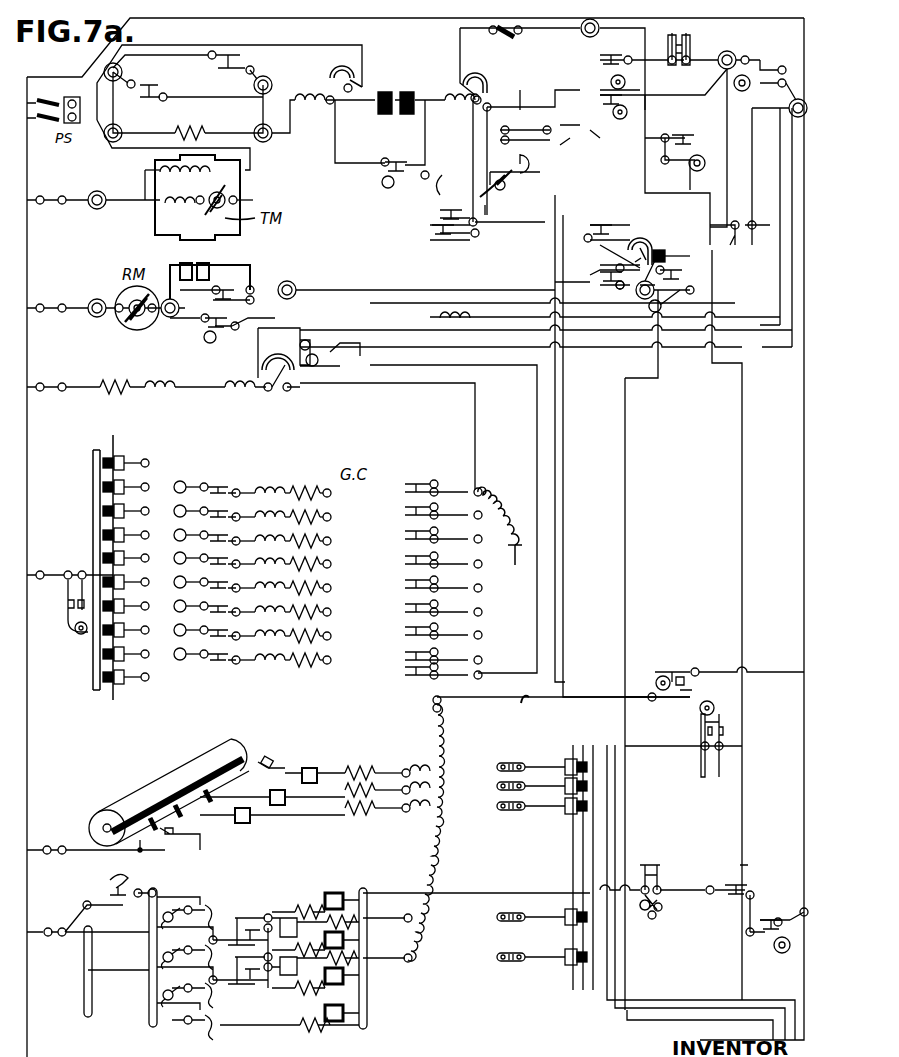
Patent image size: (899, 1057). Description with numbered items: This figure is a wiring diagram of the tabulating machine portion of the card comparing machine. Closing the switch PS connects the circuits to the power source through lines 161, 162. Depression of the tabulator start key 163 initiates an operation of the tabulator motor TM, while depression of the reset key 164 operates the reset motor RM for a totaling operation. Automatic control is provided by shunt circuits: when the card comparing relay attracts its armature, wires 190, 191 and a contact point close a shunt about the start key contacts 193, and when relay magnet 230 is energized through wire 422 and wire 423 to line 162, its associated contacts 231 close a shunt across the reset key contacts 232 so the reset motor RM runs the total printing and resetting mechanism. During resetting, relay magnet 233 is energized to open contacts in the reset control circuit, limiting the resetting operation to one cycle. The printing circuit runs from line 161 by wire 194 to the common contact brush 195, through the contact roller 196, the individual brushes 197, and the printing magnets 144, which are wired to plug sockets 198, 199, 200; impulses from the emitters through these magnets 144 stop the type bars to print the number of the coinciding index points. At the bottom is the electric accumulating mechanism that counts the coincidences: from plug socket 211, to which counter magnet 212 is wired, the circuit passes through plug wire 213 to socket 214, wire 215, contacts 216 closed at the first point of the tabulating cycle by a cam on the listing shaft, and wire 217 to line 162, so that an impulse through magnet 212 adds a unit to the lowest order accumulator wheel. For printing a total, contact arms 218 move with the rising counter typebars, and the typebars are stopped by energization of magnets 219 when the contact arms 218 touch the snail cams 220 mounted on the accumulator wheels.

The line 161 is at (27, 172).
The line 162 is at (804, 396).
The tabulator start key 163 is at (436, 208).
The start key contacts 193 is at (440, 232).
The reset key 164 is at (611, 257).
The contacts 231 is at (642, 244).
The relay magnet 230 is at (660, 254).
The reset key contacts 232 is at (555, 280).
The relay magnet 233 is at (452, 323).
The wire 423 is at (738, 250).
The wire 190 is at (557, 432).
The wire 191 is at (565, 465).
The wire 422 is at (623, 558).
The contacts 216 is at (690, 670).
The wire 217 is at (765, 675).
The socket 214 is at (433, 705).
The wire 215 is at (537, 709).
The plug wire 213 is at (435, 862).
The contact roller 196 is at (175, 770).
The individual brushes 197 is at (278, 754).
The common contact brush 195 is at (180, 824).
The wire 194 is at (140, 852).
The printing magnets 144 is at (292, 805).
The plug socket 198 is at (406, 771).
The plug socket 199 is at (387, 783).
The plug socket 200 is at (387, 819).
The plug socket 211 is at (412, 958).
The magnets 219 is at (343, 978).
The counter magnet 212 is at (290, 985).
The contact arms 218 is at (196, 993).
The snail cams 220 is at (168, 995).